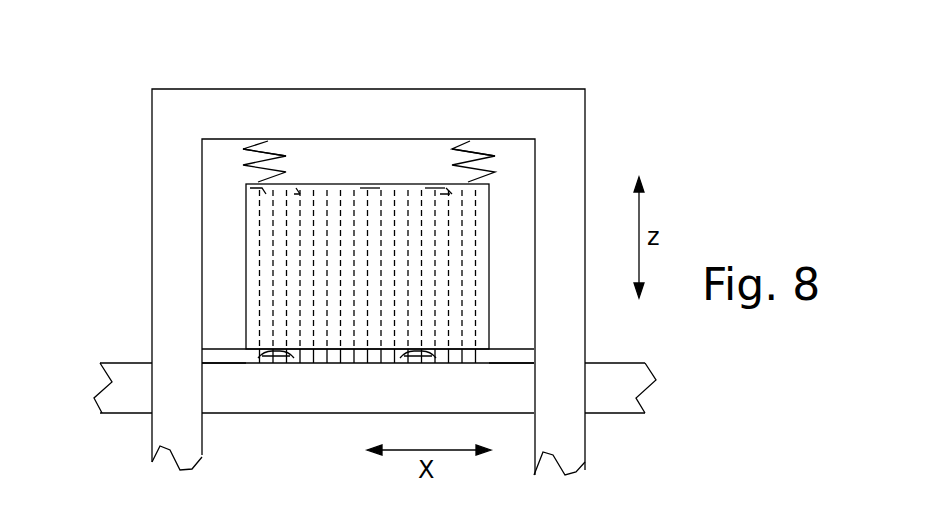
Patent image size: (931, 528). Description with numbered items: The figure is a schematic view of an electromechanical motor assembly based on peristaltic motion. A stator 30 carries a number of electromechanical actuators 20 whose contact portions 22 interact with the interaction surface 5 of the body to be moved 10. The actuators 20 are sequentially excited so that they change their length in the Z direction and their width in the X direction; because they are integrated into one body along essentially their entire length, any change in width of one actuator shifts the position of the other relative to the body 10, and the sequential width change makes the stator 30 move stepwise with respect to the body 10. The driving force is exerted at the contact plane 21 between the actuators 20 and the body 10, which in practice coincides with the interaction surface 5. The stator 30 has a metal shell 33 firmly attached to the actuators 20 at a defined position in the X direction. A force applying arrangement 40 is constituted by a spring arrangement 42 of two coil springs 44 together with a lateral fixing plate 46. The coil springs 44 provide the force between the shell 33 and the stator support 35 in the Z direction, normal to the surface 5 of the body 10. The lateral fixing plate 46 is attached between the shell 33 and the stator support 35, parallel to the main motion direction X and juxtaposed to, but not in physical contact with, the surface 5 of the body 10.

The interaction surface 5 is at (127, 363).
The body to be moved 10 is at (622, 378).
The electromechanical actuators 20 is at (264, 270).
The contact plane 21 is at (266, 364).
The contact portions 22 is at (332, 364).
The stator 30 is at (386, 189).
The metal shell 33 is at (442, 189).
The stator support 35 is at (556, 90).
The force applying arrangement 40 is at (202, 147).
The spring arrangement 42 is at (262, 150).
The coil springs 44 is at (268, 149).
The lateral fixing plate 46 is at (230, 350).